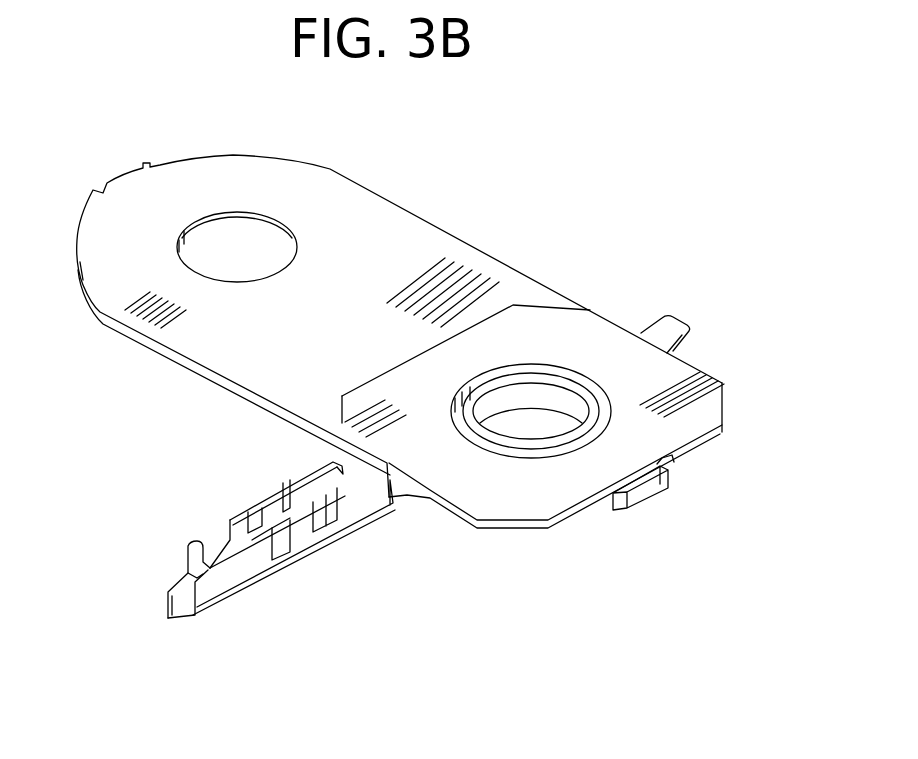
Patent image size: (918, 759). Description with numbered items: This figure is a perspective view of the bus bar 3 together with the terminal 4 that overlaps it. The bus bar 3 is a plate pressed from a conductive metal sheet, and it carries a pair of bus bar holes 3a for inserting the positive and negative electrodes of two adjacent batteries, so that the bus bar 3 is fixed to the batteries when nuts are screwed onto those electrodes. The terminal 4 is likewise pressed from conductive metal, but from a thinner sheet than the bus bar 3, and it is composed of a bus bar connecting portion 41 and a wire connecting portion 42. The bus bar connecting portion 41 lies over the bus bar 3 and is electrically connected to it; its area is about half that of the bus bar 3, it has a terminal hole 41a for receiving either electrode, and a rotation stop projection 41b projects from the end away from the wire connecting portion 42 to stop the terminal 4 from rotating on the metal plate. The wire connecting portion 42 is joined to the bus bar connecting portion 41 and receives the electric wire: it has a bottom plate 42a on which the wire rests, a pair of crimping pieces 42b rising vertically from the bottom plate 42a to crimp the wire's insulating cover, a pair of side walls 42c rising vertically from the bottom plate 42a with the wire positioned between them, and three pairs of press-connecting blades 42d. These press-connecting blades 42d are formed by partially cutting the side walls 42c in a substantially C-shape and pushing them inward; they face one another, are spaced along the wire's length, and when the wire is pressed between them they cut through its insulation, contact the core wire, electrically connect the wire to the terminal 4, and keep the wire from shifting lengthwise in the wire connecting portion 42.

The bus bar 3 is at (478, 243).
The bus bar hole 3a is at (248, 222).
The terminal 4 is at (427, 411).
The bus bar connecting portion 41 is at (497, 527).
The terminal hole 41a is at (527, 378).
The rotation stop projection 41b is at (670, 335).
The wire connecting portion 42 is at (287, 533).
The bottom plate 42a is at (173, 609).
The crimping piece 42b is at (195, 565).
The side wall 42c is at (228, 521).
The press-connecting blade 42d is at (290, 500).